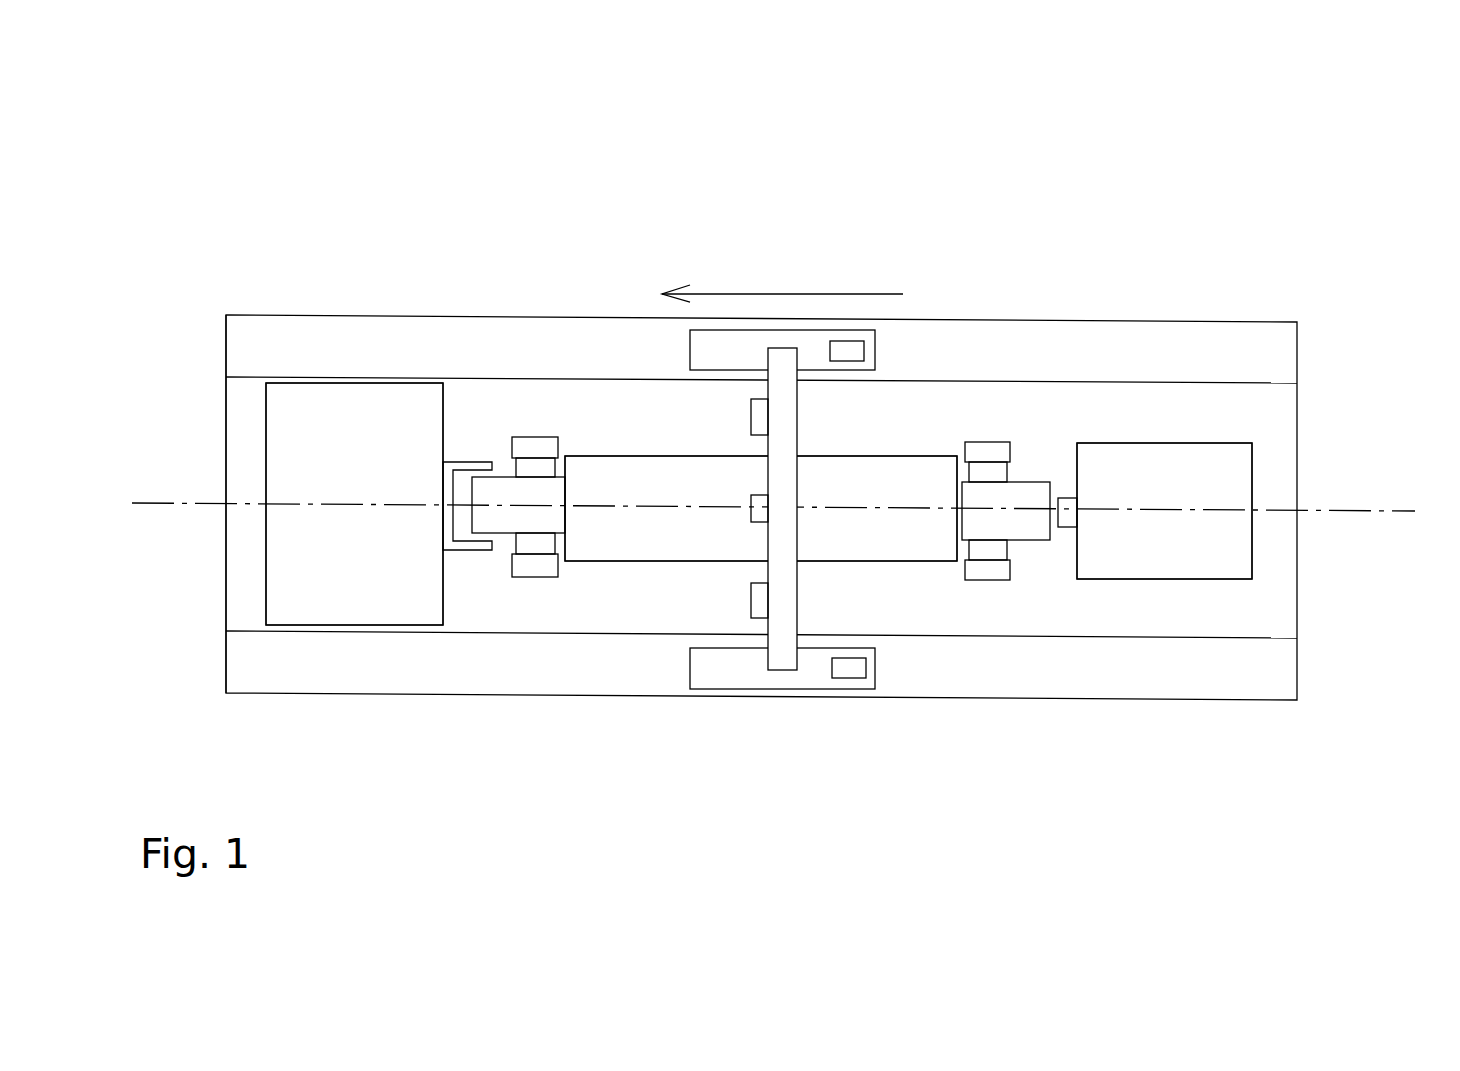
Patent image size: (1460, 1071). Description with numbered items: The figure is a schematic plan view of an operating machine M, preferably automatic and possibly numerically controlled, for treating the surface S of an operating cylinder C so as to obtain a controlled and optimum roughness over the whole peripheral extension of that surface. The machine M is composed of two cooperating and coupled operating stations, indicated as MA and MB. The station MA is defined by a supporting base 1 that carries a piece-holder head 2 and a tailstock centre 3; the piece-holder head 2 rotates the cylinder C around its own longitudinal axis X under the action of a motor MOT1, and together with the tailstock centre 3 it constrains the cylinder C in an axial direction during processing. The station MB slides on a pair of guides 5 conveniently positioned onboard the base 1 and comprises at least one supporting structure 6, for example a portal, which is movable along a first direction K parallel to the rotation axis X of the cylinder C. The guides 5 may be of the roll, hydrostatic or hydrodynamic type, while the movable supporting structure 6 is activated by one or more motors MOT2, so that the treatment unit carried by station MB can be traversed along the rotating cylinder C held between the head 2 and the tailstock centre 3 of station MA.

The supporting base 1 is at (1298, 423).
The piece-holder head 2 is at (328, 462).
The tailstock centre 3 is at (1218, 491).
The guides 5 is at (443, 343).
The supporting structure 6 is at (786, 613).
The operating cylinder C is at (882, 535).
The surface of the operating cylinder S is at (903, 457).
The operating station MB is at (688, 350).
The operating station MA is at (1253, 563).
The motor MOT1 is at (335, 558).
The motors MOT2 is at (847, 352).
The operating machine M is at (1218, 282).
The first direction K is at (782, 281).
The longitudinal axis X is at (773, 491).